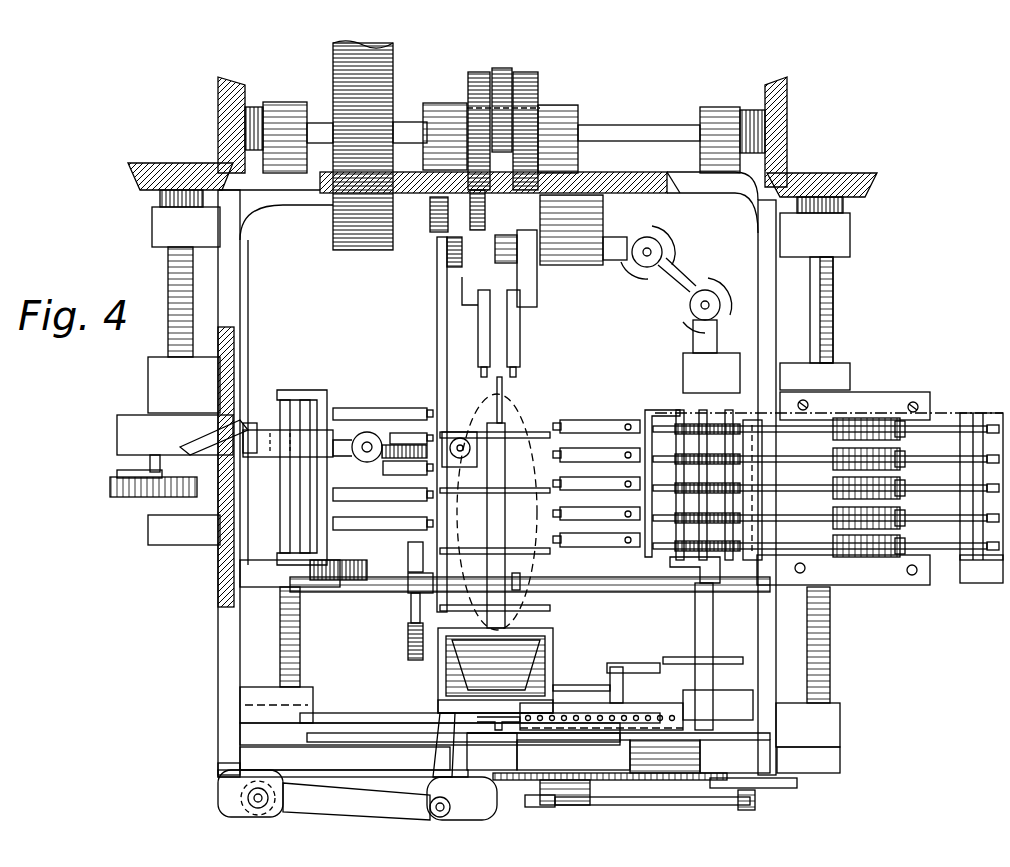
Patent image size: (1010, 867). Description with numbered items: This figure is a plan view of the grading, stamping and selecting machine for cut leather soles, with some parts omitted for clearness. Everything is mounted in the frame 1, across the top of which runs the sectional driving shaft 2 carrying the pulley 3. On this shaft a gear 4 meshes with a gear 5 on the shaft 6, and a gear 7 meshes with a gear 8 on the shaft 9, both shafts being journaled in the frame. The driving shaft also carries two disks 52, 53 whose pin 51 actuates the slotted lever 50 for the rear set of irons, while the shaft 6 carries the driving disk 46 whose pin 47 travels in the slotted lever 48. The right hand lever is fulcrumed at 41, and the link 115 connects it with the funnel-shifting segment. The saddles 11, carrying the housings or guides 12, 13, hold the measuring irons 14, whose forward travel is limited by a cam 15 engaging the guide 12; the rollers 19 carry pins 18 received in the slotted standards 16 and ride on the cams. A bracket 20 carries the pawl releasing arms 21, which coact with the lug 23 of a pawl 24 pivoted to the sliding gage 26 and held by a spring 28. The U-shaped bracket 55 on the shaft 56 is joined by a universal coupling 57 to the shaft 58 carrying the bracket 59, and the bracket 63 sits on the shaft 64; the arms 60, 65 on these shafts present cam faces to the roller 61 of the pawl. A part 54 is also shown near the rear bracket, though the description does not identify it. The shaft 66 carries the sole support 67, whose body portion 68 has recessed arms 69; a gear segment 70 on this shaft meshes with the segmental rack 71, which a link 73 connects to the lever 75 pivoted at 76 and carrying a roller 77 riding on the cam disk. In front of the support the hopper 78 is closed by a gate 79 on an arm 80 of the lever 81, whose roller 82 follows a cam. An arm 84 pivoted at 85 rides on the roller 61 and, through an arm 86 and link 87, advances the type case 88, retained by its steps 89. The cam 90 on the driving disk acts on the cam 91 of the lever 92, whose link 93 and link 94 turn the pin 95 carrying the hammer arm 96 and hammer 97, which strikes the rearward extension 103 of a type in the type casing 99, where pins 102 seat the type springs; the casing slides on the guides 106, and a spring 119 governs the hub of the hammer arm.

The frame 1 is at (655, 150).
The driving shaft 2 is at (312, 120).
The pulley 3 is at (363, 145).
The gear 4 is at (218, 100).
The gear 5 is at (178, 152).
The shaft 6 is at (168, 266).
The gear 7 is at (787, 92).
The gear 8 is at (835, 165).
The shaft 9 is at (832, 300).
The saddle 11 is at (995, 560).
The housing or guide 12 is at (758, 445).
The housing or guide 13 is at (968, 430).
The measuring iron 14 is at (562, 420).
The cam 15 is at (810, 488).
The standard 16 is at (870, 416).
The pin 18 is at (862, 390).
The roller 19 is at (900, 420).
The bracket 20 is at (648, 415).
The pawl releasing arm 21 is at (648, 528).
The arm or lug 23 is at (648, 470).
The pawl 24 is at (648, 498).
The sliding gage 26 is at (590, 415).
The spring 28 is at (596, 446).
The fulcrum 41 is at (830, 685).
The driving disk 46 is at (117, 422).
The pin 47 is at (135, 462).
The slotted lever 48 is at (115, 488).
The slotted lever 50 is at (503, 68).
The pin 51 is at (530, 108).
The driving disk 52 is at (535, 75).
The driving disk 53 is at (475, 75).
The plate 54 is at (516, 333).
The bracket 55 is at (683, 395).
The shaft 56 is at (695, 622).
The universal coupling 57 is at (690, 285).
The shaft 58 is at (615, 237).
The bracket 59 is at (517, 278).
The arm 60 is at (665, 756).
The roller 61 is at (492, 751).
The bracket 63 is at (310, 400).
The shaft 64 is at (282, 628).
The arm 65 is at (350, 735).
The shaft 66 is at (600, 592).
The support 67 is at (497, 512).
The body portion 68 is at (500, 430).
The arm 69 is at (465, 430).
The gear segment 70 is at (408, 550).
The segmental rack 71 is at (408, 640).
The link 73 is at (437, 347).
The lever 75 is at (447, 255).
The pivot 76 is at (430, 212).
The roller 77 is at (485, 210).
The hopper or discharge conduit 78 is at (446, 680).
The valve or gate 79 is at (588, 690).
The arm 80 is at (640, 668).
The lever 81 is at (682, 660).
The roller 82 is at (762, 465).
The arm 84 is at (610, 763).
The pivot 85 is at (615, 805).
The arm 86 is at (680, 806).
The link 87 is at (583, 805).
The type case 88 is at (618, 751).
The steps or teeth 89 is at (732, 756).
The cam 90 is at (190, 437).
The cam 91 is at (252, 425).
The lever 92 is at (379, 447).
The link 93 is at (440, 732).
The link 94 is at (356, 801).
The pin 95 is at (248, 798).
The hammer arm 96 is at (395, 787).
The hammer 97 is at (482, 810).
The type casing 99 is at (695, 720).
The pin 102 is at (660, 712).
The rearward extension 103 is at (742, 810).
The guide 106 is at (360, 724).
The link 115 is at (800, 783).
The spring 119 is at (225, 775).